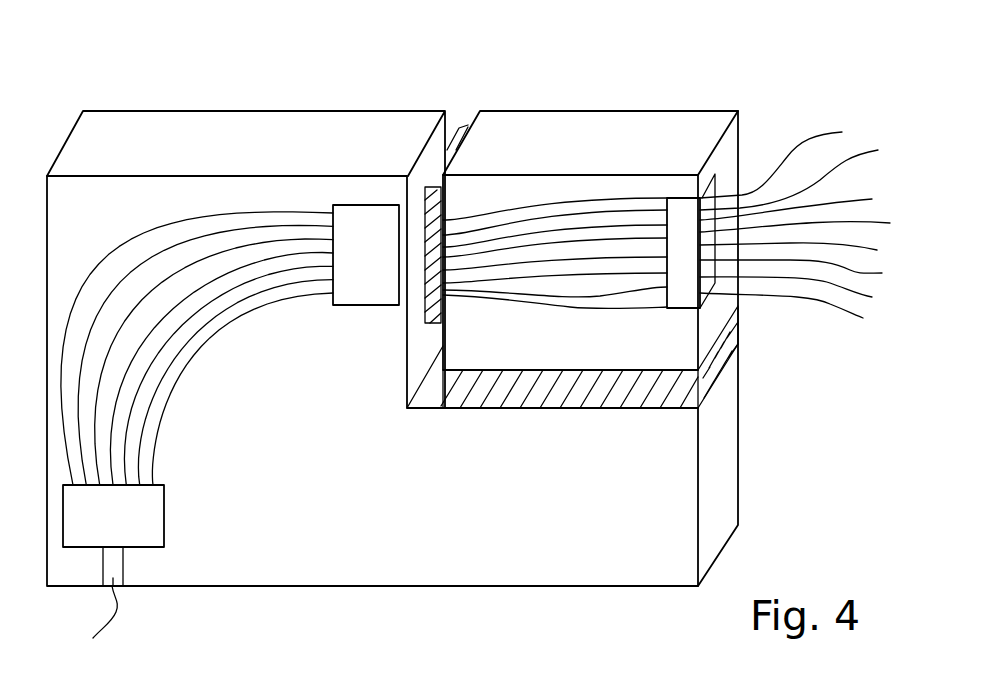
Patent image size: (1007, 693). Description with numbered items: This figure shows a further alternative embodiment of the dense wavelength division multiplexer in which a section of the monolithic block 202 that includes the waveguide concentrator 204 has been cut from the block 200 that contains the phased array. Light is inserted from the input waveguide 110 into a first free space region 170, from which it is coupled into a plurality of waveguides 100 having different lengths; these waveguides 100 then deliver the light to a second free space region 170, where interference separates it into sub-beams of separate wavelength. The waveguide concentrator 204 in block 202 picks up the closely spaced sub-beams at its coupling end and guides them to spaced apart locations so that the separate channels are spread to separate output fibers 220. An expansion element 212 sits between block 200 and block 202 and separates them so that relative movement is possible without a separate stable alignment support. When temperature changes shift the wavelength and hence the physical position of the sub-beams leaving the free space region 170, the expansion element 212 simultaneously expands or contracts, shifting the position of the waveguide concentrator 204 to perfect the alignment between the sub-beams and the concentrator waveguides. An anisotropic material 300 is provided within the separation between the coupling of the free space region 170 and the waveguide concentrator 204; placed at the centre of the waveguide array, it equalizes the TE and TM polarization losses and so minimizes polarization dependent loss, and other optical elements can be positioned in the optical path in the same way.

The waveguides 100 is at (163, 225).
The waveguide 110 is at (117, 603).
The free space region 170 is at (390, 270).
The waveguide block 200 is at (418, 511).
The waveguide block 202 is at (602, 165).
The waveguide concentrator 204 is at (533, 310).
The expansion element 212 is at (572, 403).
The output fibers 220 is at (785, 307).
The anisotropic material 300 is at (452, 126).